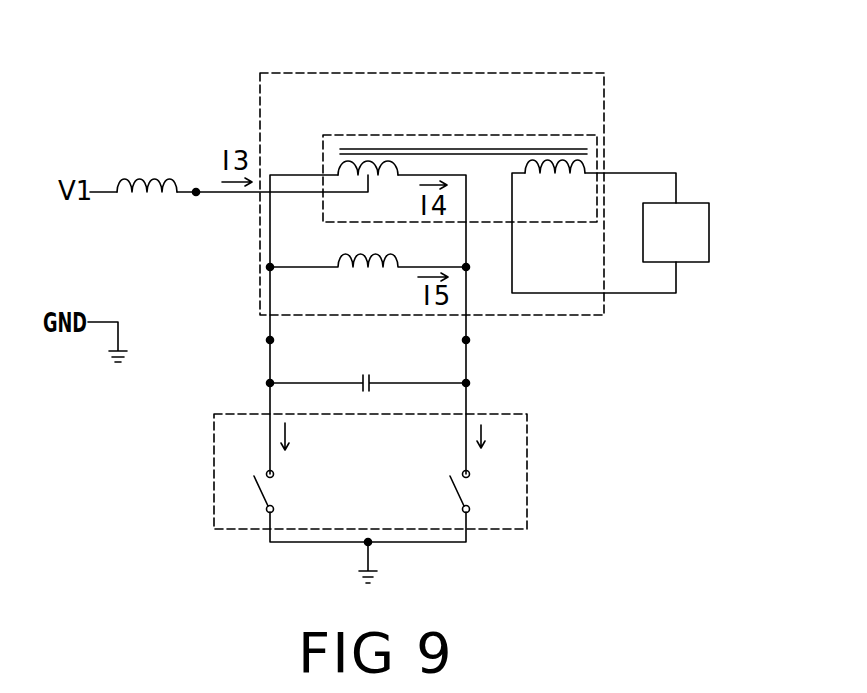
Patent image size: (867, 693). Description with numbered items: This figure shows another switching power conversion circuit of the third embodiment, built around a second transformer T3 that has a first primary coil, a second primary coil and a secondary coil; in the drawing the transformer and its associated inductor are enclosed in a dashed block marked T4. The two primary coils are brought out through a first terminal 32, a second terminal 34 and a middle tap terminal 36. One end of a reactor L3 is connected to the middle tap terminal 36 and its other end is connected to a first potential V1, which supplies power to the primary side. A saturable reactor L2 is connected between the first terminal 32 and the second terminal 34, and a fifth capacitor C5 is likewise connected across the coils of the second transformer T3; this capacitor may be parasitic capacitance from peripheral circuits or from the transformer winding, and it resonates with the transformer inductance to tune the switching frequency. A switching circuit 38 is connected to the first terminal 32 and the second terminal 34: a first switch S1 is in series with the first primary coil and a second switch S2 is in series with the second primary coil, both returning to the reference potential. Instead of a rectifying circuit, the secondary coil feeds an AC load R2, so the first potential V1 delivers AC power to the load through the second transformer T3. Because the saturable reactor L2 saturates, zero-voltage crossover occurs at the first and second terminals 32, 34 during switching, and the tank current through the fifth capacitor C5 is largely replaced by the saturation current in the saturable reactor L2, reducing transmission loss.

The first terminal 32 is at (266, 340).
The second terminal 34 is at (470, 340).
The middle tap terminal 36 is at (195, 189).
The switching circuit 38 is at (527, 484).
The transformer block T4 is at (462, 72).
The second transformer T3 is at (510, 133).
The saturable reactor L2 is at (338, 238).
The reactor L3 is at (147, 169).
The fifth capacitor C5 is at (368, 369).
The first switch S1 is at (251, 478).
The second switch S2 is at (447, 478).
The AC load R2 is at (703, 232).